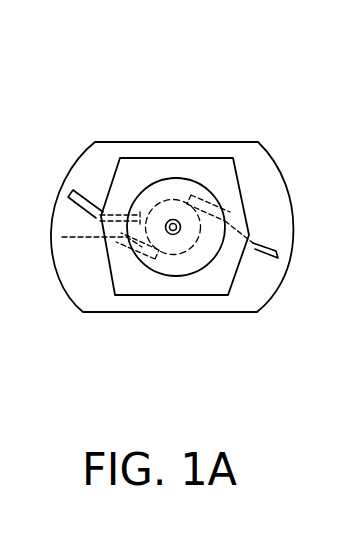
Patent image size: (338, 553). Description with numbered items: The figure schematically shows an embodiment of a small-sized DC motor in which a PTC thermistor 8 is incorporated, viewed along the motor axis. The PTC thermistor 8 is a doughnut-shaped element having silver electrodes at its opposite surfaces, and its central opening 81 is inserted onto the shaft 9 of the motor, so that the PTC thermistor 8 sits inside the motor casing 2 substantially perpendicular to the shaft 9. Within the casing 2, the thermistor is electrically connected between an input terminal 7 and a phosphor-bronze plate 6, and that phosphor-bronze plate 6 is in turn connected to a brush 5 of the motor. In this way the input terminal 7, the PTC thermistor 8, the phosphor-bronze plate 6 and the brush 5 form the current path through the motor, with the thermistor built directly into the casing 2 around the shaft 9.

The motor casing 2 is at (258, 141).
The brush 5 is at (180, 268).
The phosphor-bronze plate 6 is at (135, 268).
The input terminal 7 is at (77, 187).
The PTC thermistor 8 is at (165, 185).
The opening 81 is at (172, 224).
The shaft 9 is at (180, 231).